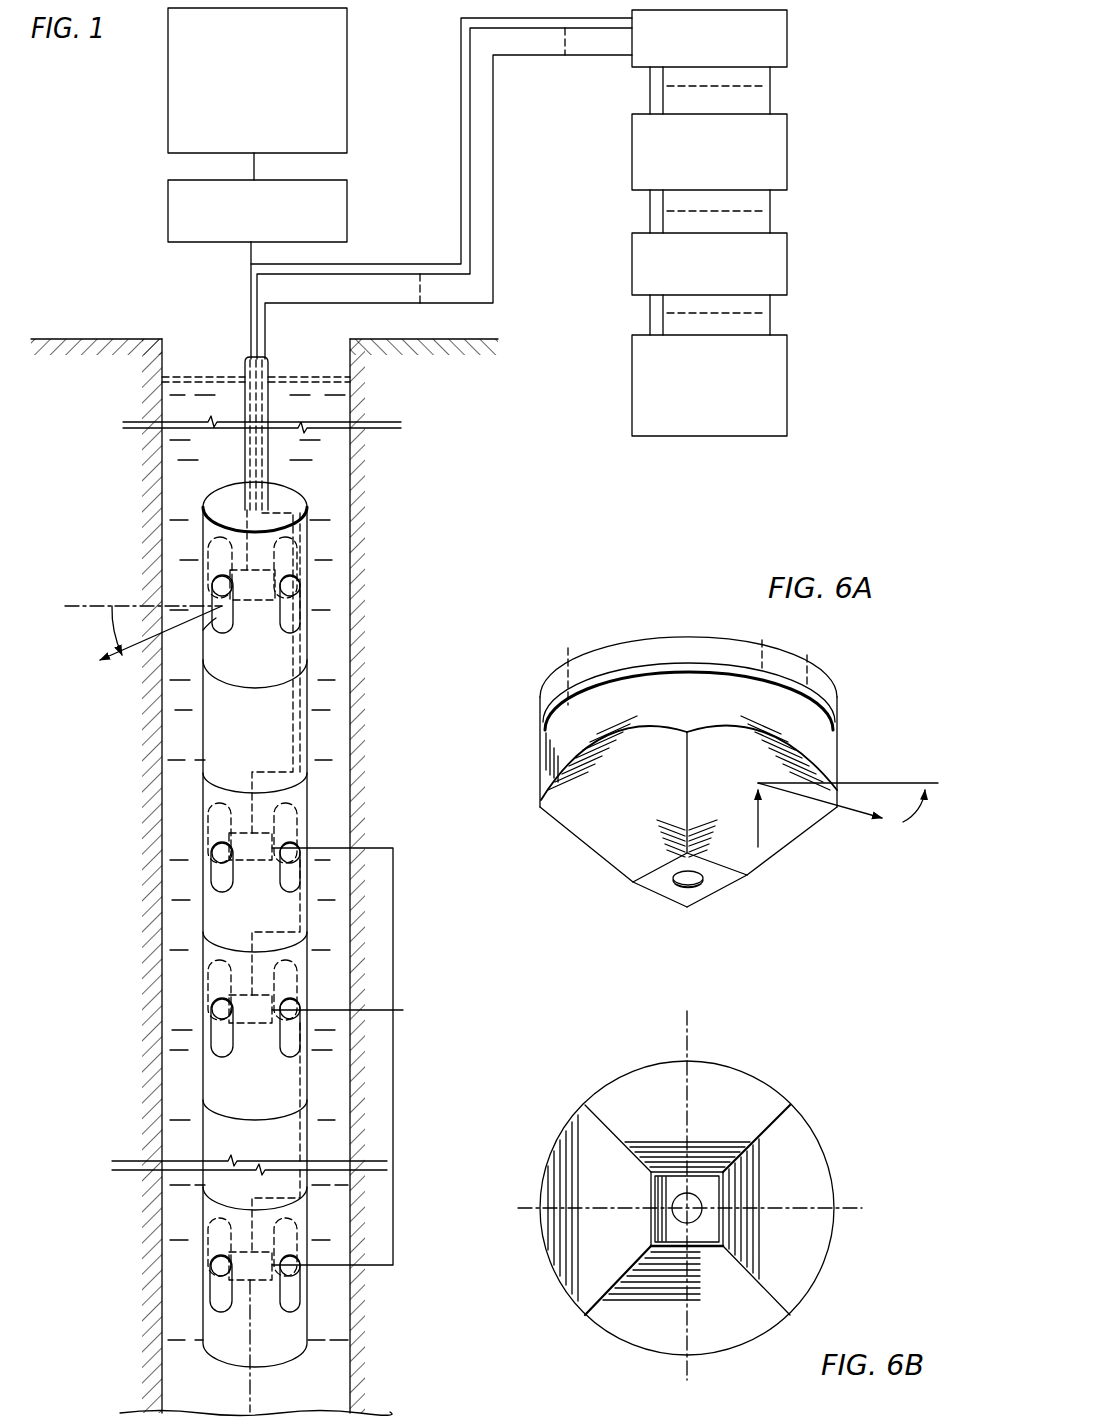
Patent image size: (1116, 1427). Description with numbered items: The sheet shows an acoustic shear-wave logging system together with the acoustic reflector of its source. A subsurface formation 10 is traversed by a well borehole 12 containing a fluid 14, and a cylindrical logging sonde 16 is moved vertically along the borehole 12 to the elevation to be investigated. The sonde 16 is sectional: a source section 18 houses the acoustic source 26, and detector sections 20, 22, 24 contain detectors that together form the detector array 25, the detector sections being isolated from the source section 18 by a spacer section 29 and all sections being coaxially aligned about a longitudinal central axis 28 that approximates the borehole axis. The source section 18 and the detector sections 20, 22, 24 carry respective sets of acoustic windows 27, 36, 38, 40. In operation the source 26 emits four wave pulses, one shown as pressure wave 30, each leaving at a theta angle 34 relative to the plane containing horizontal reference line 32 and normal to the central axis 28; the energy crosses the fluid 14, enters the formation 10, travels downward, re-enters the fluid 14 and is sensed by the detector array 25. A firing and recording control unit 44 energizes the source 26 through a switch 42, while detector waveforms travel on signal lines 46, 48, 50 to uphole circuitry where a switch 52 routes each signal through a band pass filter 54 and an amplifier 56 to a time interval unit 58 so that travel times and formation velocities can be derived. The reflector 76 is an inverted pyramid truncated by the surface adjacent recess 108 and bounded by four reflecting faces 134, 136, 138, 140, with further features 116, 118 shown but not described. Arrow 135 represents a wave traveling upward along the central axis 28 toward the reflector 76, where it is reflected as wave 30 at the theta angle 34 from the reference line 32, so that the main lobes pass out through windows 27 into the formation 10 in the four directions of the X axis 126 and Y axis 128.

In FIG. 1, the subsurface formation 10 is at (410, 471).
In FIG. 1, the well borehole 12 is at (183, 345).
In FIG. 1, the fluid 14 is at (352, 393).
In FIG. 1, the logging sonde 16 is at (190, 755).
In FIG. 1, the source section 18 is at (197, 520).
In FIG. 1, the detector section 20 is at (193, 857).
In FIG. 1, the detector section 22 is at (193, 987).
In FIG. 1, the detector section 24 is at (193, 1225).
In FIG. 1, the detector array 25 is at (412, 1056).
In FIG. 1, the acoustic source 26 is at (264, 604).
In FIG. 1, the acoustic windows 27 is at (112, 735).
In FIG. 1, the longitudinal central axis 28 is at (252, 1397).
In FIG. 1, the spacer section 29 is at (307, 720).
In FIG. 1, the pressure wave 30 is at (170, 630).
In FIG. 6A, the pressure wave 30 is at (850, 813).
In FIG. 1, the horizontal reference line 32 is at (78, 606).
In FIG. 6A, the horizontal reference line 32 is at (938, 783).
In FIG. 1, the theta angle 34 is at (133, 633).
In FIG. 6A, the theta angle 34 is at (925, 808).
In FIG. 1, the acoustic windows 36 is at (218, 875).
In FIG. 1, the acoustic windows 38 is at (218, 1043).
In FIG. 1, the acoustic windows 40 is at (250, 258).
In FIG. 1, the switch 42 is at (168, 207).
In FIG. 1, the firing and recording control unit 44 is at (168, 80).
In FIG. 1, the signal line 46 is at (461, 90).
In FIG. 1, the signal line 48 is at (470, 124).
In FIG. 1, the signal line 50 is at (493, 156).
In FIG. 1, the switch 52 is at (787, 42).
In FIG. 1, the band pass filter 54 is at (787, 142).
In FIG. 1, the amplifier 56 is at (787, 262).
In FIG. 1, the time interval unit 58 is at (787, 387).
In FIG. 6A, the acoustic reflector 76 is at (826, 736).
In FIG. 6A, the recess 108 is at (683, 890).
In FIG. 6B, the recess 108 is at (697, 1213).
In FIG. 6A, the upper ring 116 is at (548, 712).
In FIG. 6A, the lower ring 118 is at (553, 722).
In FIG. 6B, the X axis 126 is at (530, 1207).
In FIG. 6B, the Y axis 128 is at (684, 1033).
In FIG. 6A, the reflecting face 134 is at (600, 824).
In FIG. 6B, the reflecting face 134 is at (566, 1268).
In FIG. 6A, the arrow 135 is at (758, 812).
In FIG. 6A, the reflecting face 136 is at (768, 833).
In FIG. 6B, the reflecting face 136 is at (733, 1338).
In FIG. 6B, the reflecting face 138 is at (813, 1165).
In FIG. 6B, the reflecting face 140 is at (745, 1085).